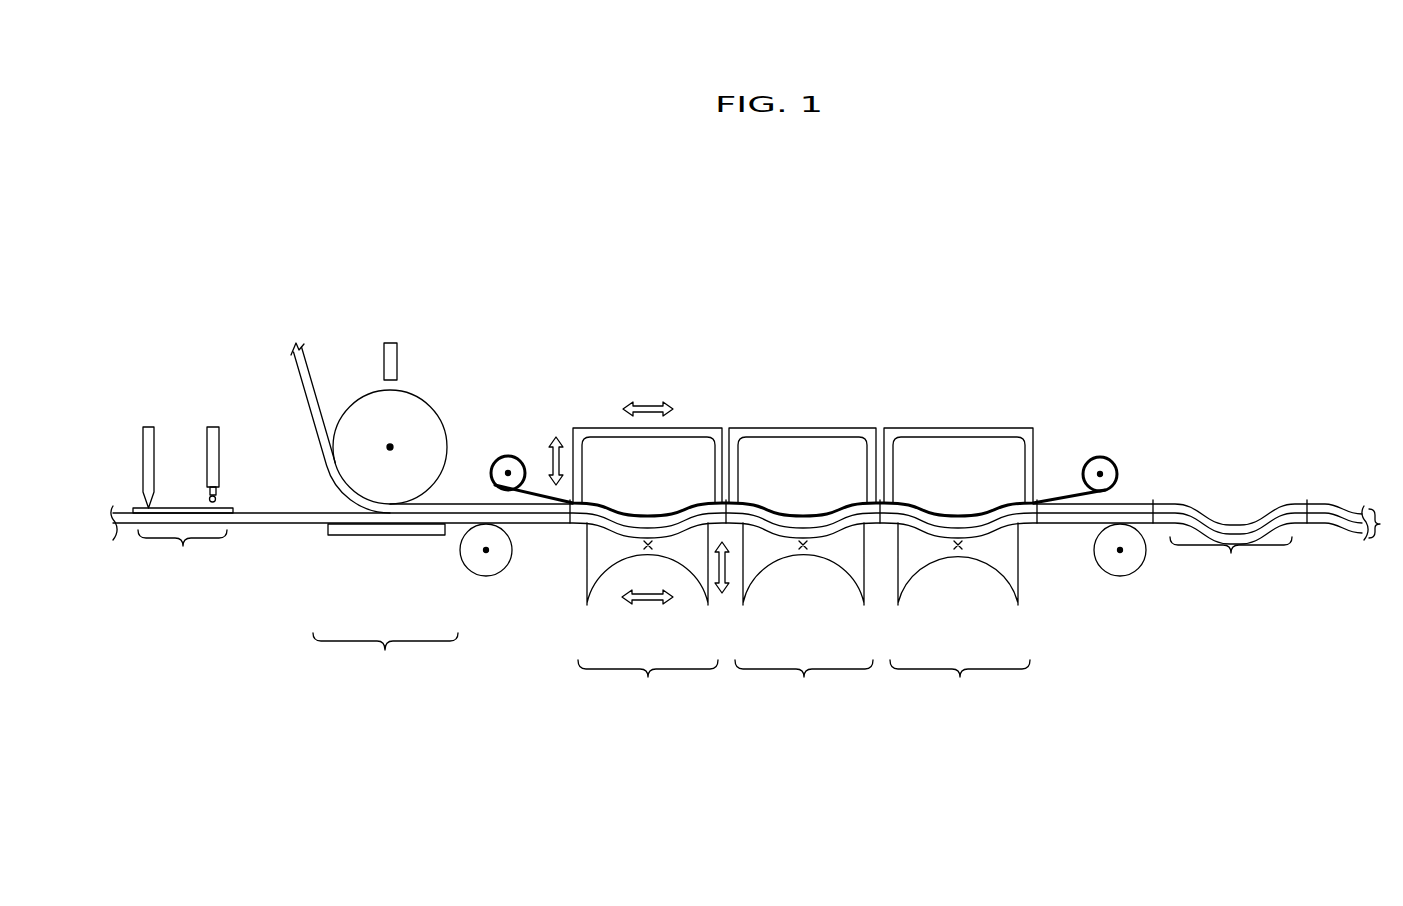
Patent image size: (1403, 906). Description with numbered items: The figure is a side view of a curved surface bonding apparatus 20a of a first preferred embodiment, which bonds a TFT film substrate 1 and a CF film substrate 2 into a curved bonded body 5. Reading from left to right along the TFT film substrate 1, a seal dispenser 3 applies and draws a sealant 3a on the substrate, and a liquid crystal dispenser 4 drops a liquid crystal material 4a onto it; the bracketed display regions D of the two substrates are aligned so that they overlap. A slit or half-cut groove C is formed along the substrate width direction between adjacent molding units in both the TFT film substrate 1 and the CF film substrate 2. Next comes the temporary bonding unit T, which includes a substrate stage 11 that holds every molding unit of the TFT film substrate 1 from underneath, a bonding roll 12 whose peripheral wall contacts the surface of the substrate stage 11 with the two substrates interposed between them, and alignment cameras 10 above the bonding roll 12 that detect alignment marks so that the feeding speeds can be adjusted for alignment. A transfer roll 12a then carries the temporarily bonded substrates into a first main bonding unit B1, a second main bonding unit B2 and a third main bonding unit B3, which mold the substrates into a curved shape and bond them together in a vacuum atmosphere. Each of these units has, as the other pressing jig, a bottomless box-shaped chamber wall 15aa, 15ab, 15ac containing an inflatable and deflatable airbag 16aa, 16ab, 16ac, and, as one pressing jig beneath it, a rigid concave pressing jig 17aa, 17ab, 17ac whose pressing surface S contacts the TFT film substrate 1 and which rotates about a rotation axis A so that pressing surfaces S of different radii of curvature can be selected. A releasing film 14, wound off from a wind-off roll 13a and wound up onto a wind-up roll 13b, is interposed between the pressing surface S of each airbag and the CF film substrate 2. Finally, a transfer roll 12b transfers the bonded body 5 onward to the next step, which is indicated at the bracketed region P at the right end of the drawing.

The curved surface bonding apparatus 20a is at (573, 222).
The TFT film substrate 1 is at (313, 516).
The CF film substrate 2 is at (302, 380).
The seal dispenser 3 is at (143, 450).
The sealant 3a is at (185, 508).
The liquid crystal dispenser 4 is at (219, 452).
The liquid crystal material 4a is at (217, 500).
The bonded body 5 is at (1382, 523).
The alignment cameras 10 is at (397, 352).
The substrate stage 11 is at (375, 535).
The bonding roll 12 is at (425, 413).
The transfer roll 12a is at (486, 576).
The transfer roll 12b is at (1121, 576).
The wind-off roll 13a is at (503, 458).
The wind-up roll 13b is at (1101, 458).
The releasing film 14 is at (538, 496).
The chamber wall 15aa is at (610, 430).
The chamber wall 15ab is at (772, 430).
The chamber wall 15ac is at (924, 430).
The airbag 16aa is at (668, 458).
The airbag 16ab is at (832, 458).
The airbag 16ac is at (986, 458).
The concave pressing jig 17aa is at (612, 564).
The concave pressing jig 17ab is at (768, 564).
The concave pressing jig 17ac is at (923, 564).
The pressing surface S is at (603, 539).
The rotation axis A is at (649, 549).
The half-cut groove C is at (1040, 508).
The display region D is at (182, 556).
The temporary bonding unit T is at (385, 658).
The post-processing section P is at (1231, 563).
The first main bonding unit B1 is at (648, 688).
The second main bonding unit B2 is at (804, 688).
The third main bonding unit B3 is at (960, 688).